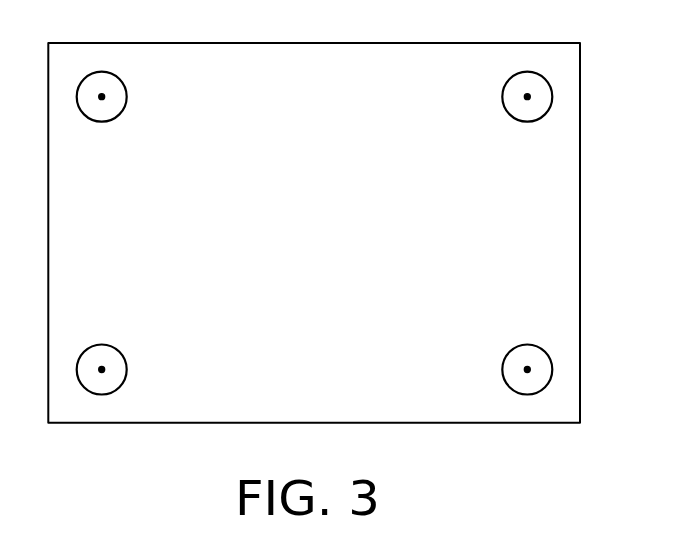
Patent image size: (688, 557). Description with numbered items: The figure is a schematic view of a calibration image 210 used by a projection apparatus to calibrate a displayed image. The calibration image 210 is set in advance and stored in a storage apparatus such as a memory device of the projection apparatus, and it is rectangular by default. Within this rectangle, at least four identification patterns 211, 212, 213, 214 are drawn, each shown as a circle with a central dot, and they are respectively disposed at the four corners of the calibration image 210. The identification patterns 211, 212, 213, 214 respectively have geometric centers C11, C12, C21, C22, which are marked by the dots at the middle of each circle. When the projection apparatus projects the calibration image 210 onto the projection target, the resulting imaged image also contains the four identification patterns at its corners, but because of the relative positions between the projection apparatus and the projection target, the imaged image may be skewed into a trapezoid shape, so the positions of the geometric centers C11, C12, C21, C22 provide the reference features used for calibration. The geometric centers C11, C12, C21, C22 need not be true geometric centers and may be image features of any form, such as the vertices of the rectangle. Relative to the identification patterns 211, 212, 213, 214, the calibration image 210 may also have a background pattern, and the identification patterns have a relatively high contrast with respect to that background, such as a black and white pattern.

The calibration image 210 is at (487, 43).
The identification pattern 211 is at (127, 94).
The identification pattern 212 is at (502, 95).
The identification pattern 213 is at (127, 364).
The identification pattern 214 is at (502, 368).
The geometric center C11 is at (102, 97).
The geometric center C12 is at (527, 97).
The geometric center C21 is at (102, 370).
The geometric center C22 is at (527, 370).